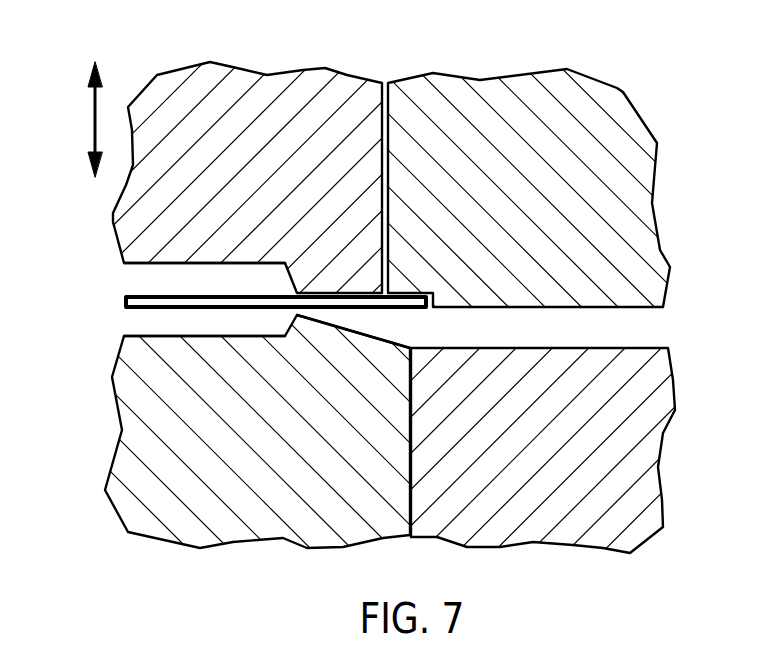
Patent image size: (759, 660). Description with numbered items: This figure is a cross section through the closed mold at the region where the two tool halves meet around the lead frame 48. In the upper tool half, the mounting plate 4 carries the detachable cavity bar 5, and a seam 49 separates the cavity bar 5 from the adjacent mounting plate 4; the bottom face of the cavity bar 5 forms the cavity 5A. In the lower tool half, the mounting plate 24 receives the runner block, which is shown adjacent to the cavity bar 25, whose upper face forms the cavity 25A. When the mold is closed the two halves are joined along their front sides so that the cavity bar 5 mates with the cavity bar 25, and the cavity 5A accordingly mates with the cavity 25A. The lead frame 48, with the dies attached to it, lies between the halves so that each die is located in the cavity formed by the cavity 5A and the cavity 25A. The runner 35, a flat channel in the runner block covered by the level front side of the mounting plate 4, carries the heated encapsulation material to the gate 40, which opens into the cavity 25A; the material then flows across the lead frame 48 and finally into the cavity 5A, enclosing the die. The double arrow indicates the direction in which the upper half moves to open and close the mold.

The mounting plate 4 is at (534, 174).
The cavity bar 5 is at (244, 173).
The cavity 5A is at (158, 279).
The mounting plate 24 is at (531, 465).
The cavity bar 25 is at (264, 465).
The cavity 25A is at (160, 325).
The runner 35 is at (543, 332).
The gate 40 is at (381, 323).
The lead frame 48 is at (143, 303).
The seam 49 is at (383, 64).